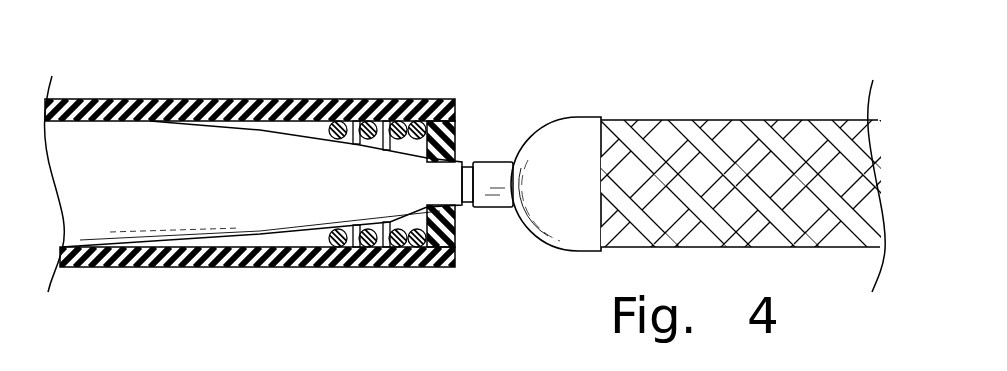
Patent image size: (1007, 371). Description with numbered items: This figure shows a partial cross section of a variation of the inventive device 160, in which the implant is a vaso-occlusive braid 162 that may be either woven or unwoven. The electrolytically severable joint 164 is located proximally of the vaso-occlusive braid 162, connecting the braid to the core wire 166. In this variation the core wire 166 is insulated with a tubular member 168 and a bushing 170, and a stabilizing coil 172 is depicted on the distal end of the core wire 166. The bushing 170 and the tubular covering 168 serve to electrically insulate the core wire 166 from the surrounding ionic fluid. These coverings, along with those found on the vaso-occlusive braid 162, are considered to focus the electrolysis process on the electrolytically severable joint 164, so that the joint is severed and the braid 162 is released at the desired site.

The inventive device 160 is at (705, 185).
The vaso-occlusive braid 162 is at (750, 120).
The electrolytically severable joint 164 is at (471, 163).
The core wire 166 is at (139, 157).
The tubular member 168 is at (185, 268).
The bushing 170 is at (458, 222).
The stabilizing coil 172 is at (364, 242).